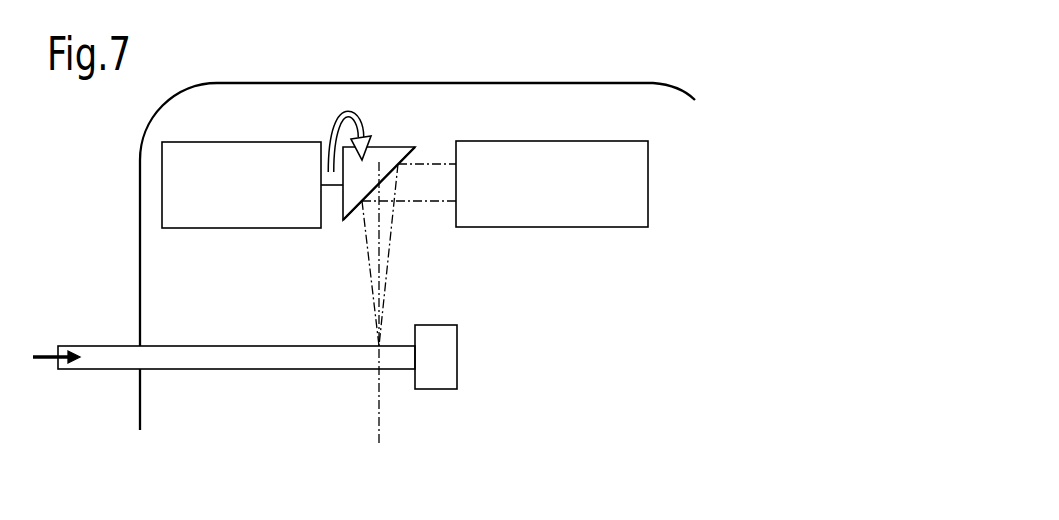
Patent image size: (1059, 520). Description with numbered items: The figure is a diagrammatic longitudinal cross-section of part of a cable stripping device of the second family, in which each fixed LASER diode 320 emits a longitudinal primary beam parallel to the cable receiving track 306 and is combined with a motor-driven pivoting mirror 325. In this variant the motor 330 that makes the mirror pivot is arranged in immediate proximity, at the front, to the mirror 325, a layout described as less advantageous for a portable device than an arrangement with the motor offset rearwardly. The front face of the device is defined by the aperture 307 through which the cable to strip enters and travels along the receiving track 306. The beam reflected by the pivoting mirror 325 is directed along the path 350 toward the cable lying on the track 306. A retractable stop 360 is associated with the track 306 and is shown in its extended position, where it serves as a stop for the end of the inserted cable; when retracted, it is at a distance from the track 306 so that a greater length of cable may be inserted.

The cable receiving track 306 is at (178, 372).
The aperture 307 is at (133, 376).
The LASER diode 320 is at (640, 184).
The pivoting mirror 325 is at (392, 155).
The detector 330 is at (262, 155).
The measuring beam / focal line 350 is at (378, 418).
The retractable stop 360 is at (435, 380).